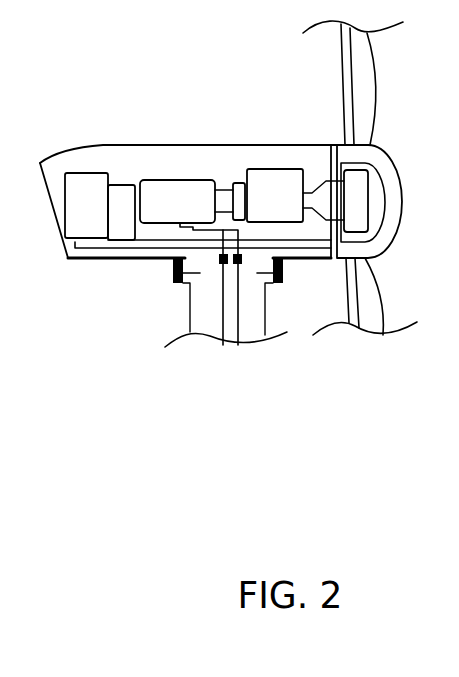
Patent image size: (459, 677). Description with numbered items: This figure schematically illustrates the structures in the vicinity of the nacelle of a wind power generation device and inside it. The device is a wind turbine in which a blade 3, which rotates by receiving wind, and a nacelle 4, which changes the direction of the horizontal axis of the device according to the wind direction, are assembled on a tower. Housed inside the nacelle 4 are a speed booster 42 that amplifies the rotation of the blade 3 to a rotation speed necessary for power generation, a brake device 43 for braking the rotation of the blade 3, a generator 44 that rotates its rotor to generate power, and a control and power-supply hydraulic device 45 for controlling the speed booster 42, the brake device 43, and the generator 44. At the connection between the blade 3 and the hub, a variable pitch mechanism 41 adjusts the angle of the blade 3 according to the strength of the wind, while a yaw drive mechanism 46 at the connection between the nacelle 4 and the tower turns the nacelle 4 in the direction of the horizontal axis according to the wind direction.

The blade 3 is at (378, 82).
The nacelle 4 is at (57, 156).
The variable pitch mechanism 41 is at (368, 197).
The speed booster 42 is at (287, 168).
The brake device 43 is at (242, 178).
The generator 44 is at (173, 178).
The control and power-supply hydraulic device 45 is at (122, 183).
The yaw drive mechanism 46 is at (285, 262).